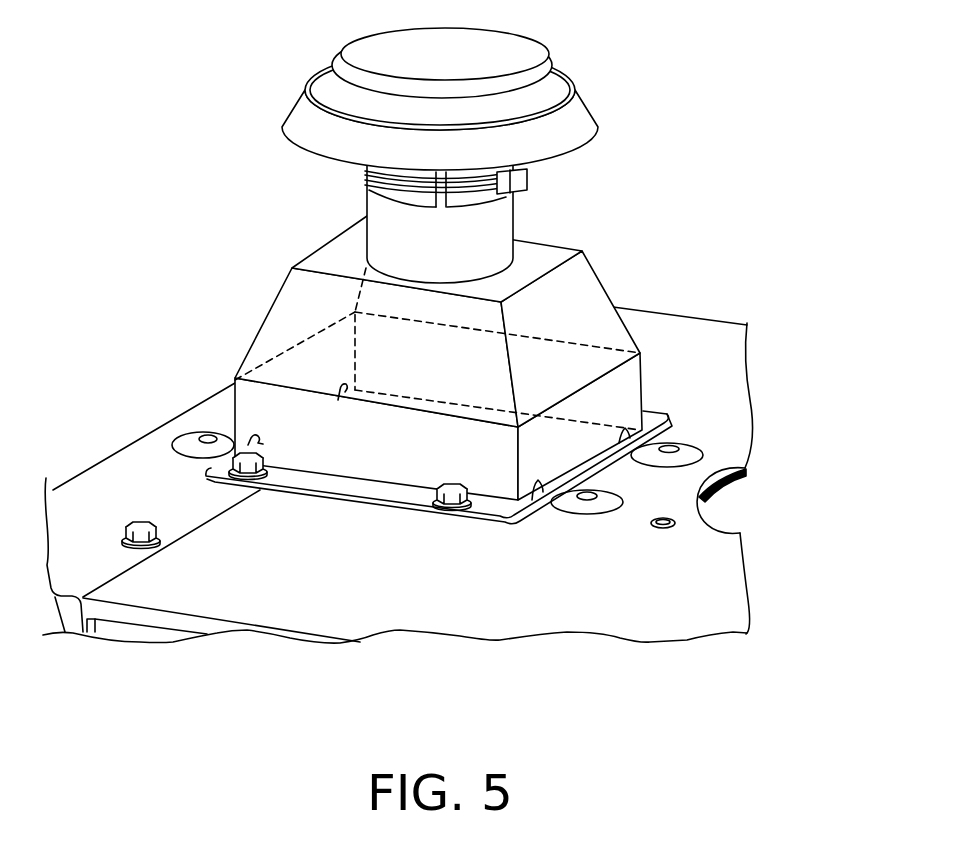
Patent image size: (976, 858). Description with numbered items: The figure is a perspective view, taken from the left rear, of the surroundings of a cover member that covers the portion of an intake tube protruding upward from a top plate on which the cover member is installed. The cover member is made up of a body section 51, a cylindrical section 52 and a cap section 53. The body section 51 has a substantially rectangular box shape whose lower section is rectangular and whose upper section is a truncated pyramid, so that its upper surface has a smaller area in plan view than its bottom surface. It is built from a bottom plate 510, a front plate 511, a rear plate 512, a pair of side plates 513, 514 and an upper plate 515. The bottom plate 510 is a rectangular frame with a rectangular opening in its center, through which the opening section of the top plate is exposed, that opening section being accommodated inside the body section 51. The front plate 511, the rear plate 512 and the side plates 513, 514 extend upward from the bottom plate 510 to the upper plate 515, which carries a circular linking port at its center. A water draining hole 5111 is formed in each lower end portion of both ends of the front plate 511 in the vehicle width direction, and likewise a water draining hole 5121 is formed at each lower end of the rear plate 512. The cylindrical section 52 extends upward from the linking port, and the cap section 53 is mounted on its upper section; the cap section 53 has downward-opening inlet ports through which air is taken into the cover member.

The body section 51 is at (450, 379).
The bottom plate 510 is at (300, 477).
The front plate 511 is at (300, 328).
The water draining hole 5111 is at (322, 407).
The rear plate 512 is at (627, 388).
The water draining hole 5121 is at (646, 444).
The side plate 513 is at (352, 453).
The side plate 514 is at (600, 315).
The upper plate 515 is at (545, 250).
The cylindrical section 52 is at (387, 218).
The cap section 53 is at (591, 102).